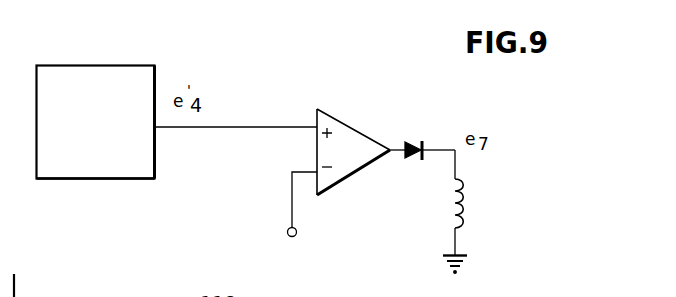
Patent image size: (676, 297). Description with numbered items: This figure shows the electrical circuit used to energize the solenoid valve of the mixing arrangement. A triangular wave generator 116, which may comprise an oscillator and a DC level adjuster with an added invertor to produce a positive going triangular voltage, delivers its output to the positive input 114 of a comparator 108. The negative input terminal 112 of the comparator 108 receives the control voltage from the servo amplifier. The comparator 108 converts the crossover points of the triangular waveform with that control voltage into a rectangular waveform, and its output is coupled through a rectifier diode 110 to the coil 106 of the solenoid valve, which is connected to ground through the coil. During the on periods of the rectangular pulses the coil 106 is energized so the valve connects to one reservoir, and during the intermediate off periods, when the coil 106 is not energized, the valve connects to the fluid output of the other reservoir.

The coil 106 is at (451, 207).
The comparator 108 is at (356, 143).
The rectifier diode 110 is at (424, 144).
The negative input terminal 112 is at (297, 231).
The positive input 114 is at (270, 126).
The triangular wave generator 116 is at (93, 78).